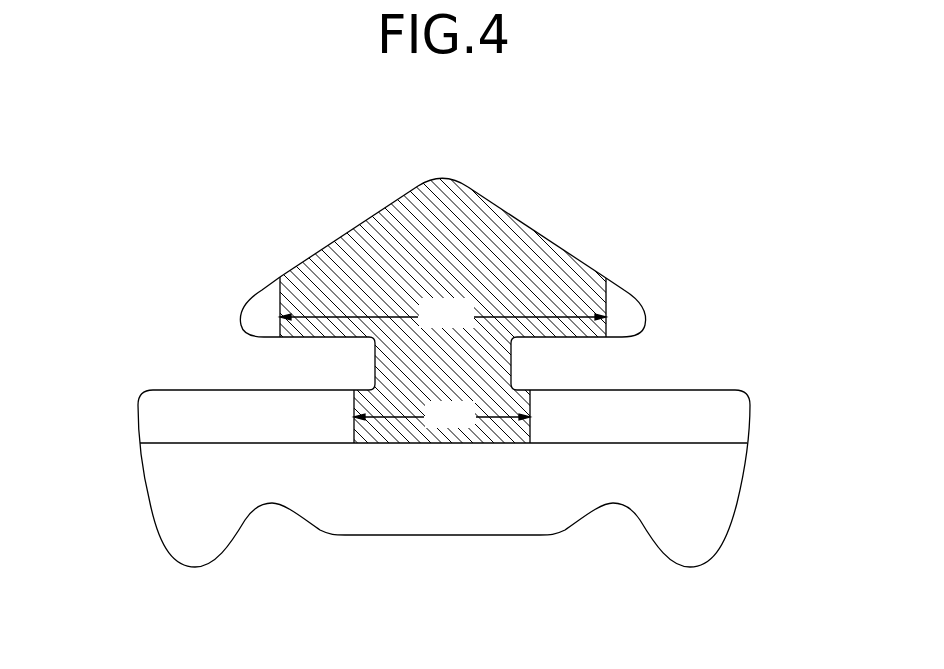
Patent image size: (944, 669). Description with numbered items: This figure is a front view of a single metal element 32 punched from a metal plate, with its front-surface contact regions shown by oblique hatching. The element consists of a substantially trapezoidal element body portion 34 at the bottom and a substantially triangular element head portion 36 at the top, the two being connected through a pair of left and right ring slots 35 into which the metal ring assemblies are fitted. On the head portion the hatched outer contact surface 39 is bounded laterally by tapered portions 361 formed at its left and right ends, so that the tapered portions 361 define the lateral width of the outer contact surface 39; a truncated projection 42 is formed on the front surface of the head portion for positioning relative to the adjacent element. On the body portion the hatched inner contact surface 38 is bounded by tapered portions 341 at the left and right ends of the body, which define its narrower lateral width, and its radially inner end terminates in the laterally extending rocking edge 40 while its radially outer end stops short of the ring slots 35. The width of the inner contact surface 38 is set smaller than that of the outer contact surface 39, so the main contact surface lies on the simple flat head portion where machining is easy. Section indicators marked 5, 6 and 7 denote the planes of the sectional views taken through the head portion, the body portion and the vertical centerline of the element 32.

The metal element 32 is at (450, 331).
The element body portion 34 is at (451, 478).
The tapered portion 341 is at (765, 463).
The ring slot 35 is at (285, 341).
The element head portion 36 is at (303, 263).
The tapered portion 361 is at (258, 305).
The inner contact surface 38 is at (498, 432).
The outer contact surface 39 is at (512, 232).
The rocking edge 40 is at (438, 445).
The projection 42 is at (442, 242).
The section line 5- 5 is at (215, 316).
The section line 6- 6 is at (130, 430).
The section line 7- 7 is at (444, 174).